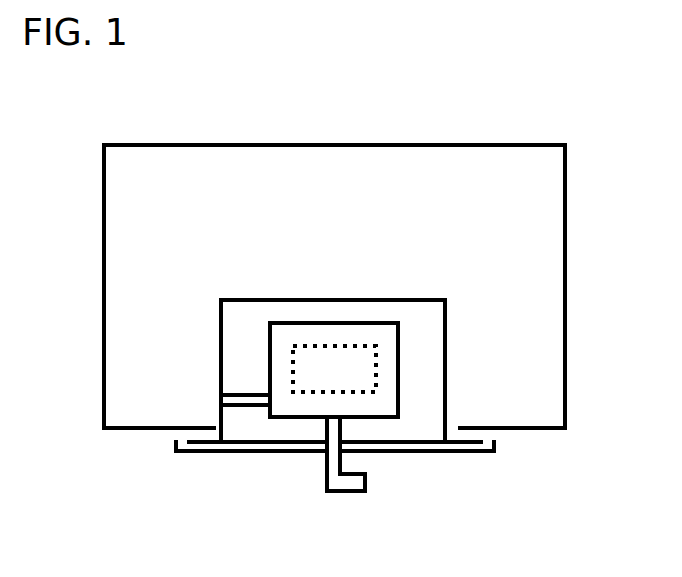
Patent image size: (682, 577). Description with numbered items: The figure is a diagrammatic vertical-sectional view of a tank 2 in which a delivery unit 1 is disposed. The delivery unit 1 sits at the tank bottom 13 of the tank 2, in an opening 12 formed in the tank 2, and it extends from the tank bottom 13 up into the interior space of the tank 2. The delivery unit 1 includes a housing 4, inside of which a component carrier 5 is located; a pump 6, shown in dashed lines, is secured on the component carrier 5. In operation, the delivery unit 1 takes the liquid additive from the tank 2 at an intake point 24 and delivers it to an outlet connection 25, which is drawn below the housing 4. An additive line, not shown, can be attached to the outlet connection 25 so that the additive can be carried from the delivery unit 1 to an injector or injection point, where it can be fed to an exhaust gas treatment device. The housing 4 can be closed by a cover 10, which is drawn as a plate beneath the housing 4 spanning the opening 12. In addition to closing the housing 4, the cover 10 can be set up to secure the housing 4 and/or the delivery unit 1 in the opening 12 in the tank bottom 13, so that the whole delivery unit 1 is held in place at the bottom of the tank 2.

The delivery unit 1 is at (244, 274).
The tank 2 is at (580, 146).
The housing 4 is at (402, 298).
The component carrier 5 is at (400, 333).
The pump 6 is at (376, 384).
The cover 10 is at (495, 455).
The opening 12 is at (214, 428).
The tank bottom 13 is at (542, 432).
The intake point 24 is at (217, 397).
The outlet connection 25 is at (340, 493).